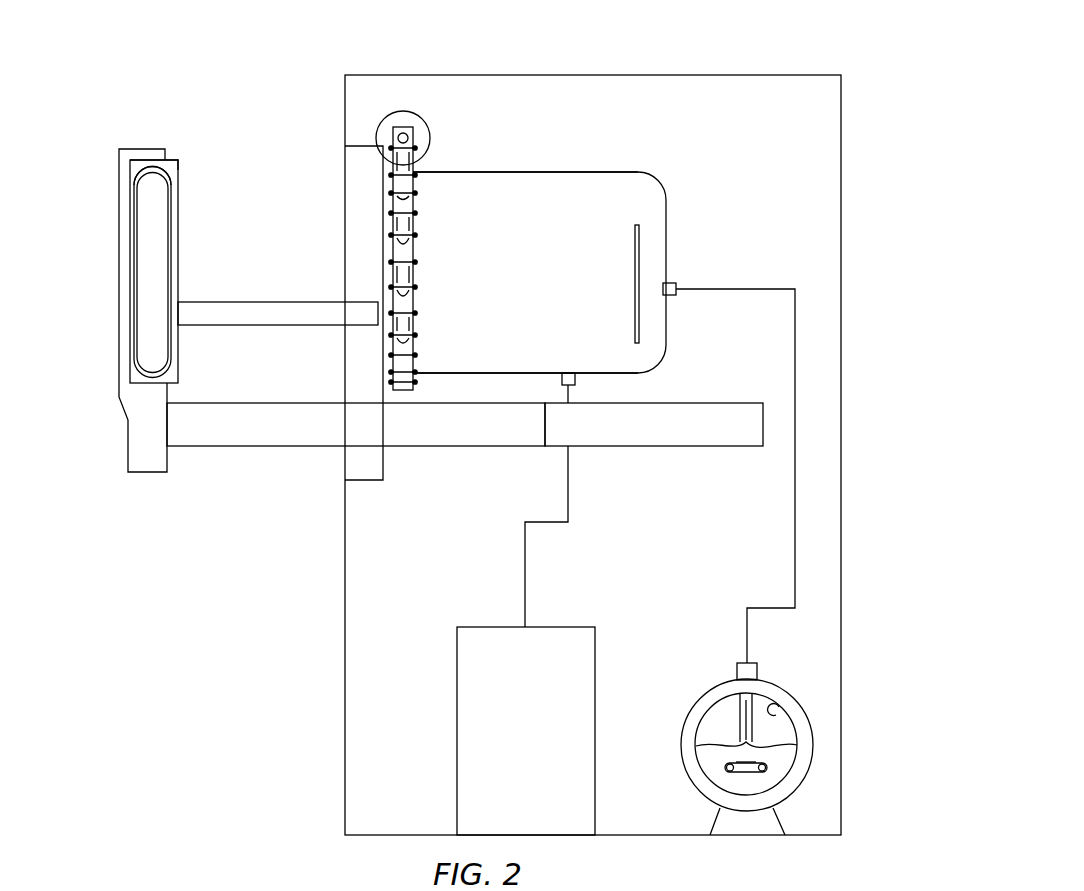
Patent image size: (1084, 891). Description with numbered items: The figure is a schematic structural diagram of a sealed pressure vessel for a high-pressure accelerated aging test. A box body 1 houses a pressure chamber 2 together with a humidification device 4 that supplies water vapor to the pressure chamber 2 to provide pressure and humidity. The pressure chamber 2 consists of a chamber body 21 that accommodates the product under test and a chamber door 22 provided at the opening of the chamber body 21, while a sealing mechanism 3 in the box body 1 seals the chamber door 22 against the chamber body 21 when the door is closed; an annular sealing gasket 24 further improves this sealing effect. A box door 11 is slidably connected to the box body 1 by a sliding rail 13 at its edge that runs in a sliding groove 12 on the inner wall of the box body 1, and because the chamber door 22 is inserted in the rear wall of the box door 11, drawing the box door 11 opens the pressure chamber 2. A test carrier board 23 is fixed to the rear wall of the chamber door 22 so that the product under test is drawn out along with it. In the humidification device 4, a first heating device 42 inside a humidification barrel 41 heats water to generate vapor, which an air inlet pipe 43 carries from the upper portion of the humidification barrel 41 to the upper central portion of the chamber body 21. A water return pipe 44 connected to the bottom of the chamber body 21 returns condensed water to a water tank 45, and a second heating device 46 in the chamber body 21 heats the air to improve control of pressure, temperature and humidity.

The box body 1 is at (842, 453).
The pressure chamber 2 is at (677, 240).
The sealing mechanism 3 is at (373, 121).
The humidification device 4 is at (810, 692).
The box door 11 is at (119, 262).
The sliding groove 12 is at (747, 403).
The sliding rail 13 is at (433, 425).
The chamber body 21 is at (573, 208).
The chamber door 22 is at (151, 174).
The test carrier board 23 is at (240, 310).
The annular sealing gasket 24 is at (165, 163).
The humidification barrel 41 is at (783, 733).
The first heating device 42 is at (765, 767).
The air inlet pipe 43 is at (797, 565).
The water return pipe 44 is at (523, 572).
The water tank 45 is at (497, 685).
The second heating device 46 is at (639, 280).